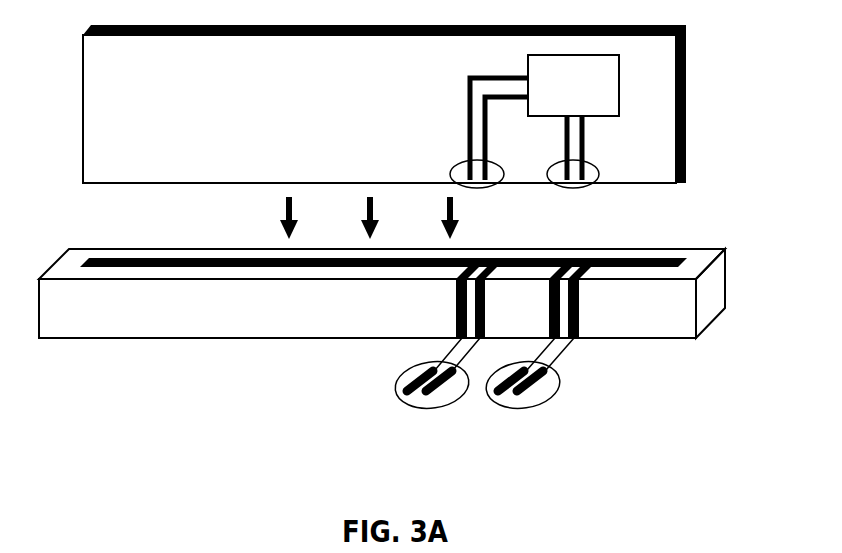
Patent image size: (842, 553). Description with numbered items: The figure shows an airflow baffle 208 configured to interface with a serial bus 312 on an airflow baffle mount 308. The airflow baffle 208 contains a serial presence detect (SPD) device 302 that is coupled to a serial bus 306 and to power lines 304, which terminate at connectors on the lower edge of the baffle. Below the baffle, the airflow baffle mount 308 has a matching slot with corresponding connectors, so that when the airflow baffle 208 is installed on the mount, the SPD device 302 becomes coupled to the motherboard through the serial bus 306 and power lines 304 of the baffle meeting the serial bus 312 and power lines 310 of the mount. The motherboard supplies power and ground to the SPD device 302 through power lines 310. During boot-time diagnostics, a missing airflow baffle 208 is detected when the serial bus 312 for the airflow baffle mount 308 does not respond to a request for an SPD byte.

The airflow baffle 208 is at (384, 104).
The serial presence detect (SPD) device 302 is at (573, 85).
The power lines 304 is at (456, 168).
The serial bus 306 is at (587, 163).
The airflow baffle mount 308 is at (200, 338).
The power lines 310 is at (396, 390).
The serial bus 312 is at (553, 391).